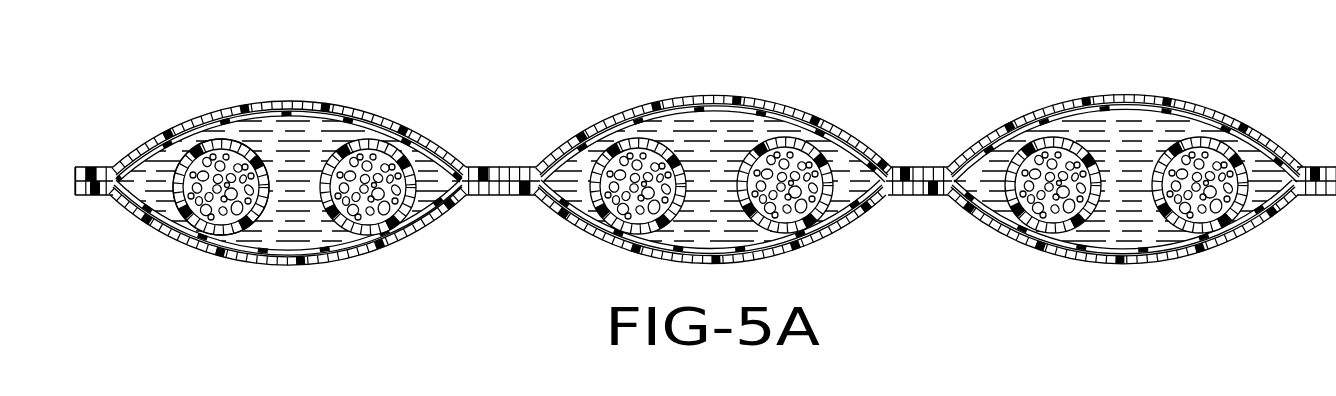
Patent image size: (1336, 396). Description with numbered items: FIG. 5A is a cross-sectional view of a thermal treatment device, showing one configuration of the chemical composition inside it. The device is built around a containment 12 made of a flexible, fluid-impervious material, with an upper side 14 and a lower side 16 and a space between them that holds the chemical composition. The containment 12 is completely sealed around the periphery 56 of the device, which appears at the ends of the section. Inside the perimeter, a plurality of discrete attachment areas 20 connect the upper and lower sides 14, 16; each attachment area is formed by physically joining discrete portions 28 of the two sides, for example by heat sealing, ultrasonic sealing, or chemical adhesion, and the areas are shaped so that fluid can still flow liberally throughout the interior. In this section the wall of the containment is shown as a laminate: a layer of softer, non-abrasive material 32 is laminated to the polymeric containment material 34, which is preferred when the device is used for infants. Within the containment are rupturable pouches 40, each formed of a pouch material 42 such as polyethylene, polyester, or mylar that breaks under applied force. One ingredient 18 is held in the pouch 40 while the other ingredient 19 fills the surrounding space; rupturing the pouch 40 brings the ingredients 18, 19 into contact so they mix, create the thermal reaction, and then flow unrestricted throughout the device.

The containment 12 is at (844, 239).
The upper side 14 is at (583, 125).
The lower side 16 is at (425, 235).
The ingredient 18 is at (360, 165).
The ingredient 19 is at (437, 190).
The discrete attachment area 20 is at (497, 197).
The discrete portion 28 is at (945, 153).
The non-abrasive material layer 32 is at (1194, 112).
The polymeric containment material 34 is at (1268, 148).
The rupturable pouch 40 is at (222, 139).
The pouch material 42 is at (200, 228).
The periphery 56 is at (103, 167).